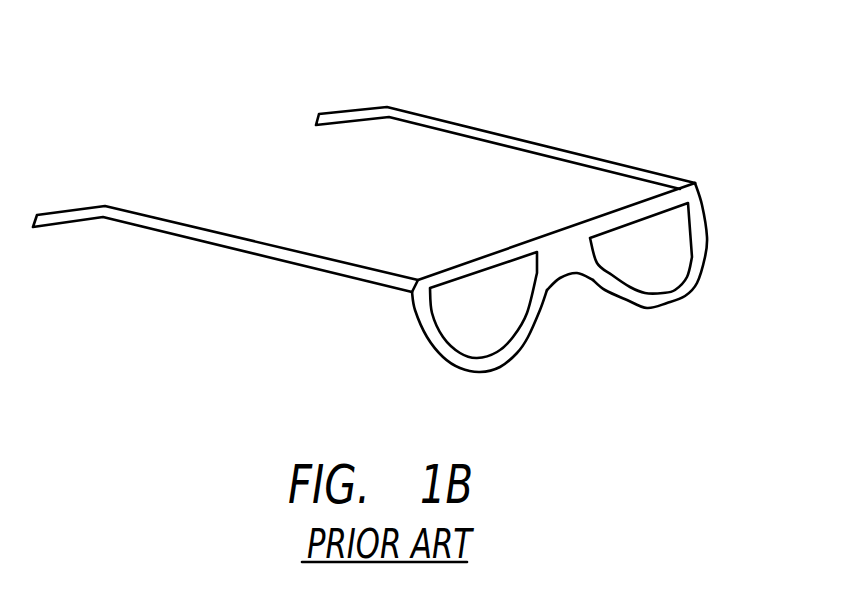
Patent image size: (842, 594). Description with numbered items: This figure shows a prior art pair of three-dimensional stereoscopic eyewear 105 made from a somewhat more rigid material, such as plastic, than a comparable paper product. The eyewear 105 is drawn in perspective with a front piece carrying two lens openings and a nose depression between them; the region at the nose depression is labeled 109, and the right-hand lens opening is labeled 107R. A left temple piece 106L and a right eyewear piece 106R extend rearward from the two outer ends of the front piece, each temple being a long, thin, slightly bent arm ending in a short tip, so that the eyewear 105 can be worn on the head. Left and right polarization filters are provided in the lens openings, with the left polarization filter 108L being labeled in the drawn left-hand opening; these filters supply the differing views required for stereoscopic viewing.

The eyewear 105 is at (428, 100).
The left temple piece 106L is at (633, 167).
The right eyewear piece 106R is at (273, 262).
The right lens 107R is at (482, 323).
The left polarization filter 108L is at (657, 262).
The bridge 109 is at (572, 300).